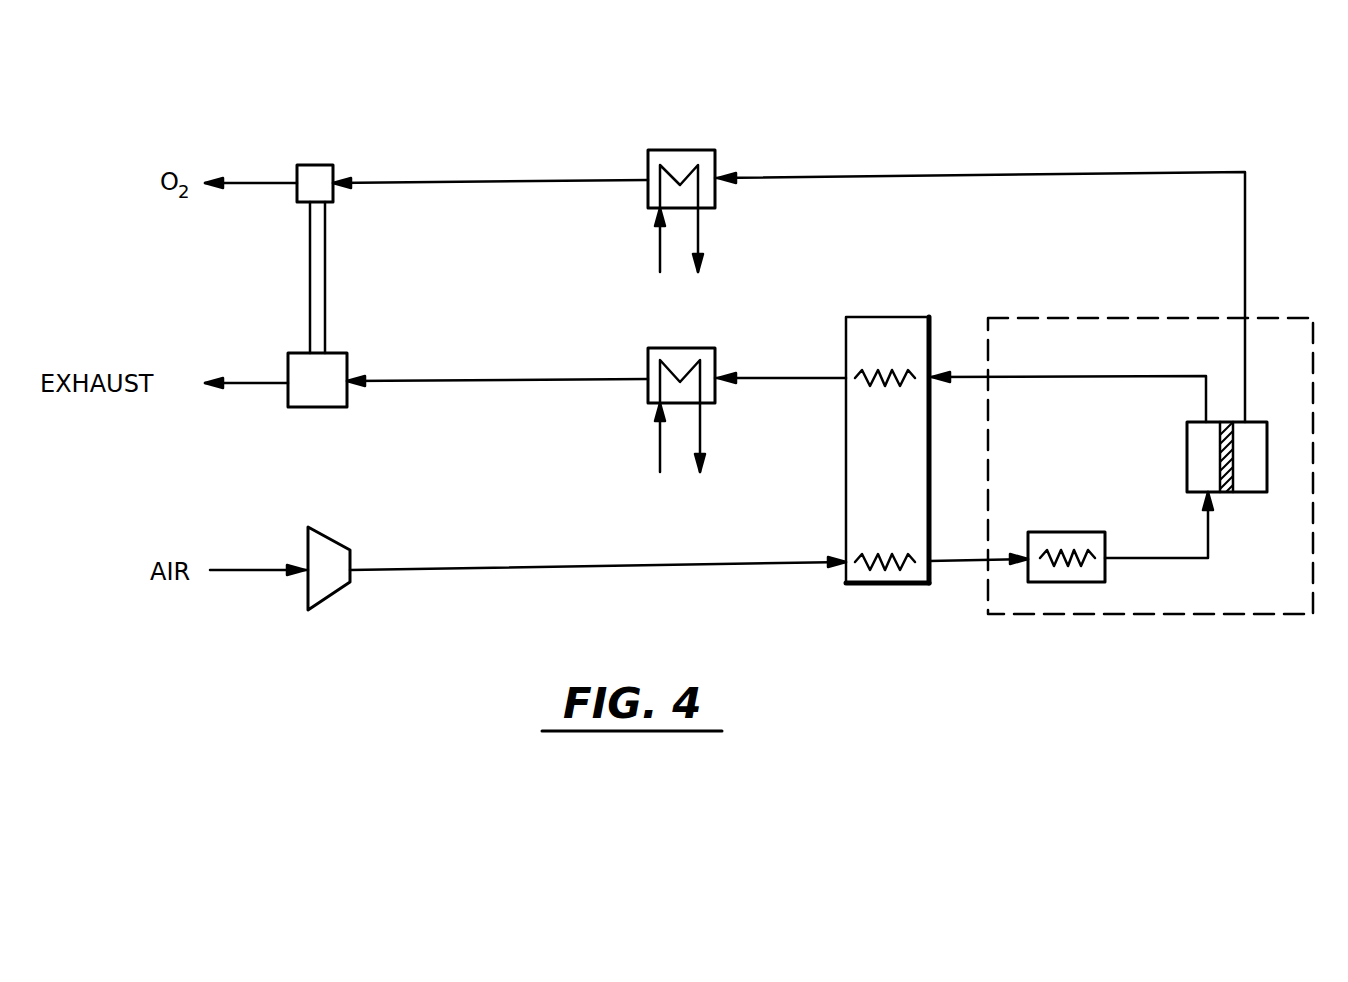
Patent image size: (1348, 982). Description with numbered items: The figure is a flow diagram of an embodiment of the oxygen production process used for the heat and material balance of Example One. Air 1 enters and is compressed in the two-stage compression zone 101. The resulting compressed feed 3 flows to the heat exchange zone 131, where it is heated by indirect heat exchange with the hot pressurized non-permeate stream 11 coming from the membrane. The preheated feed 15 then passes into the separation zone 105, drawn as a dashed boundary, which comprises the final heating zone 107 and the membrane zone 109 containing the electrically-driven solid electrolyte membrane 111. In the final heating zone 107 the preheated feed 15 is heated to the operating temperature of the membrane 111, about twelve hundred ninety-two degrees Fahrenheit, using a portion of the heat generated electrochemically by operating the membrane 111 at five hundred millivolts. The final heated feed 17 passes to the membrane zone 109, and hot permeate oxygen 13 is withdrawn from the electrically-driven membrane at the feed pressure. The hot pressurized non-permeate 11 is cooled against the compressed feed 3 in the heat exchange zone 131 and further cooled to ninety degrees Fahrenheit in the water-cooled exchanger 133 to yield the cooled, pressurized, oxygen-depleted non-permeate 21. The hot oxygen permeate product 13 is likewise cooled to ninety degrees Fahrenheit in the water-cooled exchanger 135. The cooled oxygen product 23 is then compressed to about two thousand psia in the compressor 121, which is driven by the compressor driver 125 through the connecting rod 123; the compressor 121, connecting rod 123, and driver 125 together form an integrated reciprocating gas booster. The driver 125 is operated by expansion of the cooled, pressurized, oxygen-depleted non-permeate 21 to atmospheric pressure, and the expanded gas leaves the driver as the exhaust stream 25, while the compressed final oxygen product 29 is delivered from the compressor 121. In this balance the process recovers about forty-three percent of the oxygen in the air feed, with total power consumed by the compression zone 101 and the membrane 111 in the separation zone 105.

The air 1 is at (255, 565).
The compressed feed 3 is at (478, 568).
The hot pressurized non-permeate stream 11 is at (965, 375).
The hot permeate oxygen 13 is at (981, 176).
The preheated feed 15 is at (950, 565).
The final heated feed 17 is at (1157, 557).
The cooled pressurized oxygen-depleted non-permeate 21 is at (545, 378).
The cooled oxygen product 23 is at (505, 178).
The exhaust outlet line 25 is at (272, 378).
The final oxygen product 29 is at (257, 185).
The two-stage compression zone 101 is at (330, 595).
The separation zone 105 is at (1170, 617).
The final heating zone 107 is at (1050, 532).
The membrane zone 109 is at (1243, 495).
The electrically-driven solid electrolyte membrane 111 is at (1220, 450).
The compressor 121 is at (320, 165).
The connecting rod 123 is at (326, 265).
The compressor driver 125 is at (313, 408).
The heat exchange zone 131 is at (846, 480).
The water-cooled exchanger 133 is at (700, 348).
The water-cooled exchanger 135 is at (672, 150).